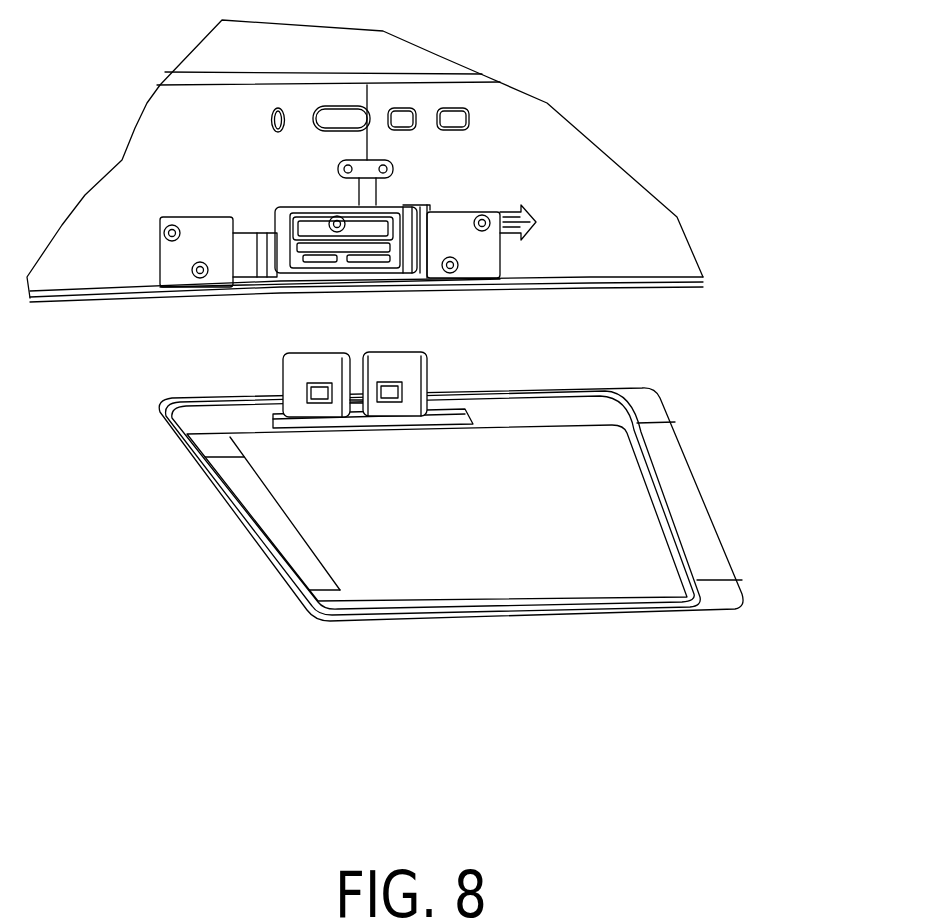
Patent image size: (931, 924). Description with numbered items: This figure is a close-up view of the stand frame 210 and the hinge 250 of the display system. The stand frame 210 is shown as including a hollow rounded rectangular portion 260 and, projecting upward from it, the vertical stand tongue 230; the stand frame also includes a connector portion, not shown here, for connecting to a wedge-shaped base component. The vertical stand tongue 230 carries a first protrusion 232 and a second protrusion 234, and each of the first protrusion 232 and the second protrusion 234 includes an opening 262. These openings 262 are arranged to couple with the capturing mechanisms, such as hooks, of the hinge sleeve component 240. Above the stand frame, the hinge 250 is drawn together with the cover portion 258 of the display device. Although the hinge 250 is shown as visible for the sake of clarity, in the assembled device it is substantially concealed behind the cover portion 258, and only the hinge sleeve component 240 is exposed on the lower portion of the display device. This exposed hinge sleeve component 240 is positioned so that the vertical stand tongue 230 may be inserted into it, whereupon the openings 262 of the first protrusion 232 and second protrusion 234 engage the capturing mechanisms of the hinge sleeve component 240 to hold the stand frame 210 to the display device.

The stand frame 210 is at (663, 487).
The vertical stand tongue 230 is at (408, 400).
The first protrusion 232 is at (293, 367).
The second protrusion 234 is at (377, 367).
The hinge sleeve component 240 is at (403, 281).
The hinge 250 is at (462, 180).
The cover portion 258 is at (487, 57).
The hollow rounded rectangular portion 260 is at (443, 520).
The opening 262 is at (322, 397).